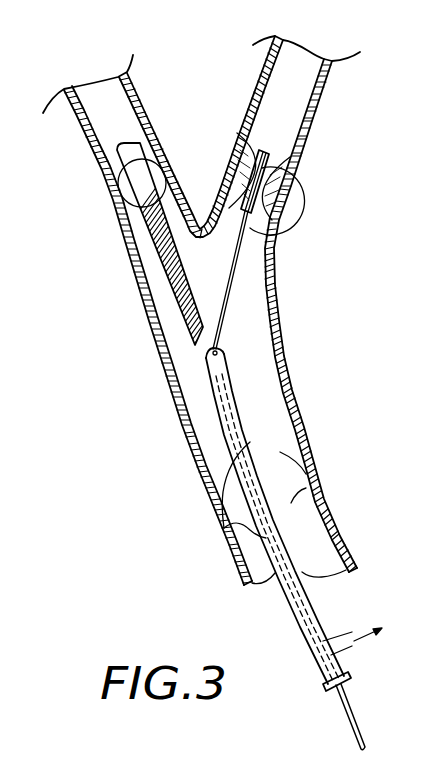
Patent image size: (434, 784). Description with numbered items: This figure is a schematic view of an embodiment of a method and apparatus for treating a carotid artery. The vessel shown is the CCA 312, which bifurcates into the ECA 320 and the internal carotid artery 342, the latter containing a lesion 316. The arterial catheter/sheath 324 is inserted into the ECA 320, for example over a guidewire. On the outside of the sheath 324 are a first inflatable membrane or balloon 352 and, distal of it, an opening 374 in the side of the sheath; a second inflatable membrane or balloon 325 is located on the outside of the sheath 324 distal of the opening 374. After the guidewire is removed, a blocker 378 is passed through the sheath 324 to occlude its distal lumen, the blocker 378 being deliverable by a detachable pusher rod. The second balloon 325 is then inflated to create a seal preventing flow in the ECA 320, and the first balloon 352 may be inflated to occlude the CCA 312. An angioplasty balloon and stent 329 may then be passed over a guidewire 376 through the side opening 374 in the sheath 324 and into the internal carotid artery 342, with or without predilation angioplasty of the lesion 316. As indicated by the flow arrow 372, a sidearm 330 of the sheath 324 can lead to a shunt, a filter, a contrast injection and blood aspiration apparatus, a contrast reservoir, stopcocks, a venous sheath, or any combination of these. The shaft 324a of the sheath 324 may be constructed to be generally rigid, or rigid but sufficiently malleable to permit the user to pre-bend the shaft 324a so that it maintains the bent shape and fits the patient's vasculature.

The CCA 312 is at (188, 440).
The ECA 320 is at (140, 100).
The internal carotid artery 342 is at (323, 92).
The second inflatable membrane or balloon 325 is at (120, 205).
The blocker 378 is at (165, 264).
The lesion 316 is at (290, 176).
The angioplasty balloon and stent 329 is at (254, 214).
The opening 374 is at (236, 343).
The arterial catheter/sheath 324 is at (326, 608).
The shaft 324a is at (297, 543).
The first inflatable membrane or balloon 352 is at (230, 528).
The flow arrow 372 is at (354, 643).
The sidearm 330 is at (348, 649).
The guidewire 376 is at (352, 733).